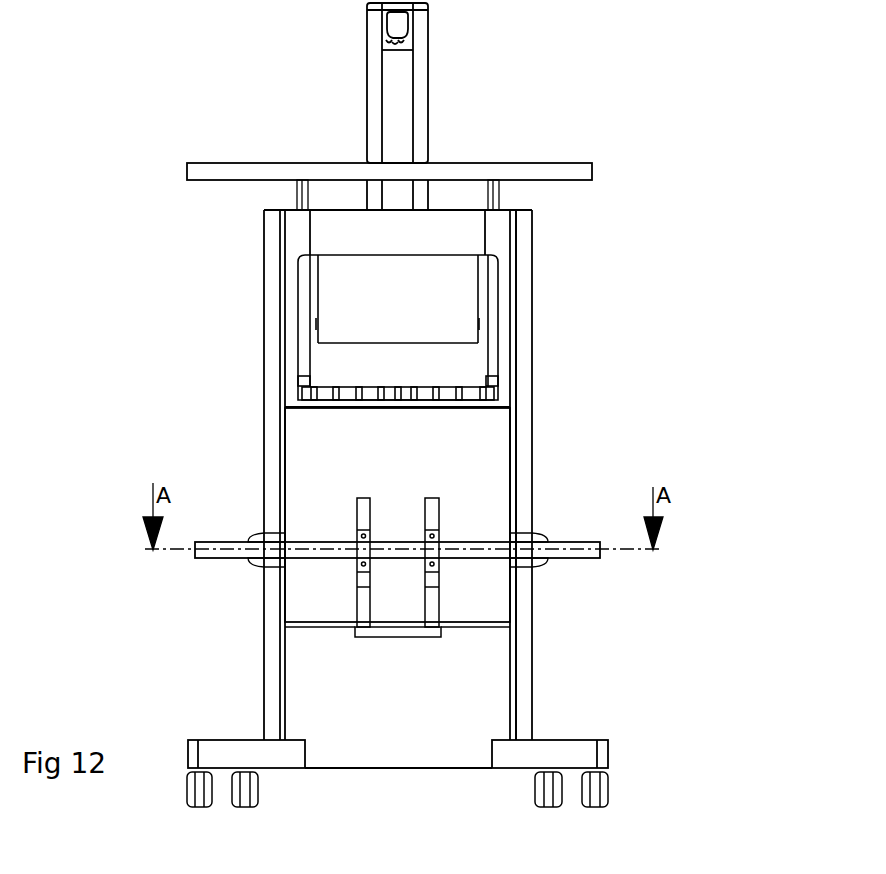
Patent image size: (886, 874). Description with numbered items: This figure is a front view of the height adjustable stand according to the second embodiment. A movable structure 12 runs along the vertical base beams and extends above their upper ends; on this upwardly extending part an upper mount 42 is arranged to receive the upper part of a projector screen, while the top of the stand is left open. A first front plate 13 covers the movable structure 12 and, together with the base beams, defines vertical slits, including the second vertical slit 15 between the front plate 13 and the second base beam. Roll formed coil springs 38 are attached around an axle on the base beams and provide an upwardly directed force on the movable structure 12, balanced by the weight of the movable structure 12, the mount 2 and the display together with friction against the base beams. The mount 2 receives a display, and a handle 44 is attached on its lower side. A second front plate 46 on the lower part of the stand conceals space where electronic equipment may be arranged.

The movable structure 12 is at (397, 100).
The upper mount 42 is at (567, 171).
The roll formed coil spring 38 is at (345, 393).
The second vertical slit 15 is at (597, 475).
The first front plate 13 is at (489, 518).
The mount 2 is at (590, 552).
The second front plate 46 is at (397, 549).
The handle 44 is at (380, 630).